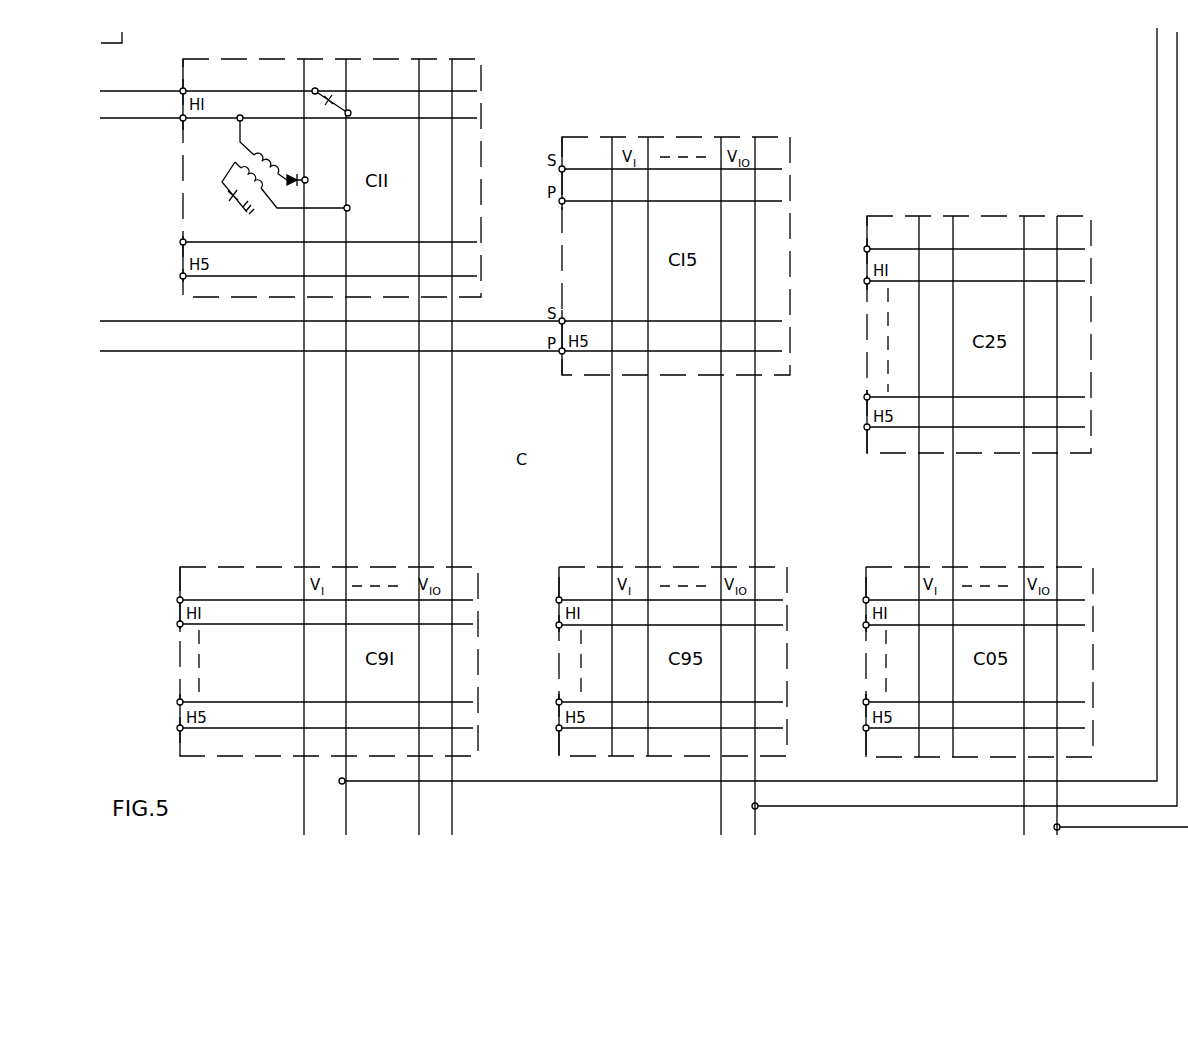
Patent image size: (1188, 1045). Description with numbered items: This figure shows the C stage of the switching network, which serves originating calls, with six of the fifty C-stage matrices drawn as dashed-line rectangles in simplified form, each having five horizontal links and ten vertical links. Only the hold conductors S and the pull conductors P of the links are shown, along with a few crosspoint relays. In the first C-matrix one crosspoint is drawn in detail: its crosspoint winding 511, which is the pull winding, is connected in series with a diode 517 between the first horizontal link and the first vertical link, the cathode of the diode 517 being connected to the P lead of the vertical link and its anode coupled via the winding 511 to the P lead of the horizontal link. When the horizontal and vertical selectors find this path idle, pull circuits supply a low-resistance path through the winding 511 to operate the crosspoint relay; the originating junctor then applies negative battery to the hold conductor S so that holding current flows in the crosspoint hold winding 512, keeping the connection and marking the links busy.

The crosspoint winding 511 is at (277, 158).
The crosspoint hold winding 512 is at (235, 162).
The diode 517 is at (296, 174).